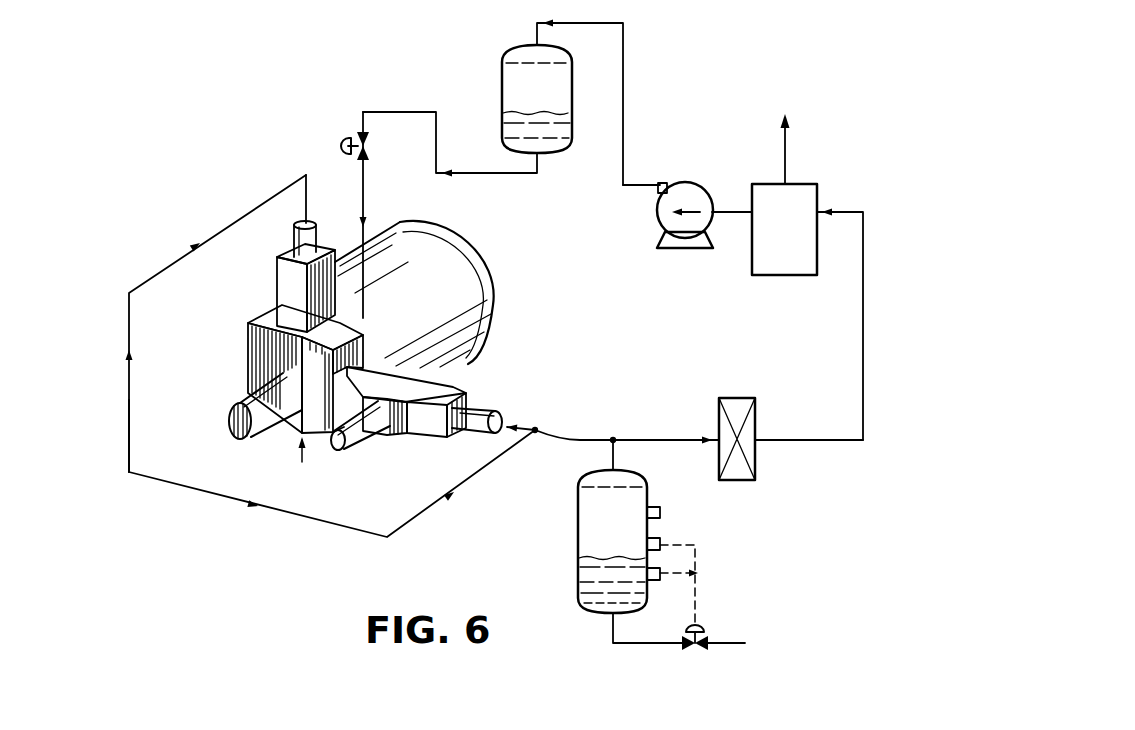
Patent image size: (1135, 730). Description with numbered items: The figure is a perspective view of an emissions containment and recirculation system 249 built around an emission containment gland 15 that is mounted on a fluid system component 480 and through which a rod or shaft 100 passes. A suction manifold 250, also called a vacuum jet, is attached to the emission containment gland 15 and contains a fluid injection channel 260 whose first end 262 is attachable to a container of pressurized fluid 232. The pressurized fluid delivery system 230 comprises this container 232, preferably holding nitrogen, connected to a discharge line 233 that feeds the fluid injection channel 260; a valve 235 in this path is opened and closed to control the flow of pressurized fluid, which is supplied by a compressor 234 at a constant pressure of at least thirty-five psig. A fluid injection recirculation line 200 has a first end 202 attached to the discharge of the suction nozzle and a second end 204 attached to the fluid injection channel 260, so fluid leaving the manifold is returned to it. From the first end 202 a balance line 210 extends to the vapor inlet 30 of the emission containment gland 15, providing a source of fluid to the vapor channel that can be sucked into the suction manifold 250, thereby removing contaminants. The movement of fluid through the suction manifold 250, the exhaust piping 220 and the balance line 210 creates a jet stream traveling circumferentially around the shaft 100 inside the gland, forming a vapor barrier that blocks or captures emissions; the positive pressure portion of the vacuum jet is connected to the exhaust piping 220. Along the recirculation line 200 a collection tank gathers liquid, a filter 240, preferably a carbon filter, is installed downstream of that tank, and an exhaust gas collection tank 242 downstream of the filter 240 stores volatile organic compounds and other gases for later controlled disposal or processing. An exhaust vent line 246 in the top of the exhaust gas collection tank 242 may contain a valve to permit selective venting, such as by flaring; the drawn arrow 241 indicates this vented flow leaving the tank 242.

The emission containment gland 15 is at (240, 345).
The vapor inlet 30 is at (290, 237).
The shaft 100 is at (222, 420).
The fluid injection recirculation line 200 is at (668, 438).
The first end of fluid injection recirculation line 202 is at (510, 426).
The second end of fluid injection recirculation line 204 is at (300, 460).
The balance line 210 is at (335, 527).
The exhaust piping 220 is at (233, 507).
The pressurized fluid delivery system 230 is at (845, 442).
The container of pressurized fluid 232 is at (502, 72).
The discharge line 233 is at (500, 175).
The compressor 234 is at (688, 185).
The valve 235 is at (358, 135).
The filter 240 is at (753, 470).
The vent flow 241 is at (762, 155).
The exhaust gas collection tank 242 is at (803, 195).
The exhaust vent line 246 is at (788, 153).
The emissions containment and recirculation system 249 is at (173, 500).
The suction manifold 250 is at (450, 375).
The fluid injection channel 260 is at (362, 449).
The first end of fluid injection channel 262 is at (333, 452).
The fluid system component 480 is at (497, 312).